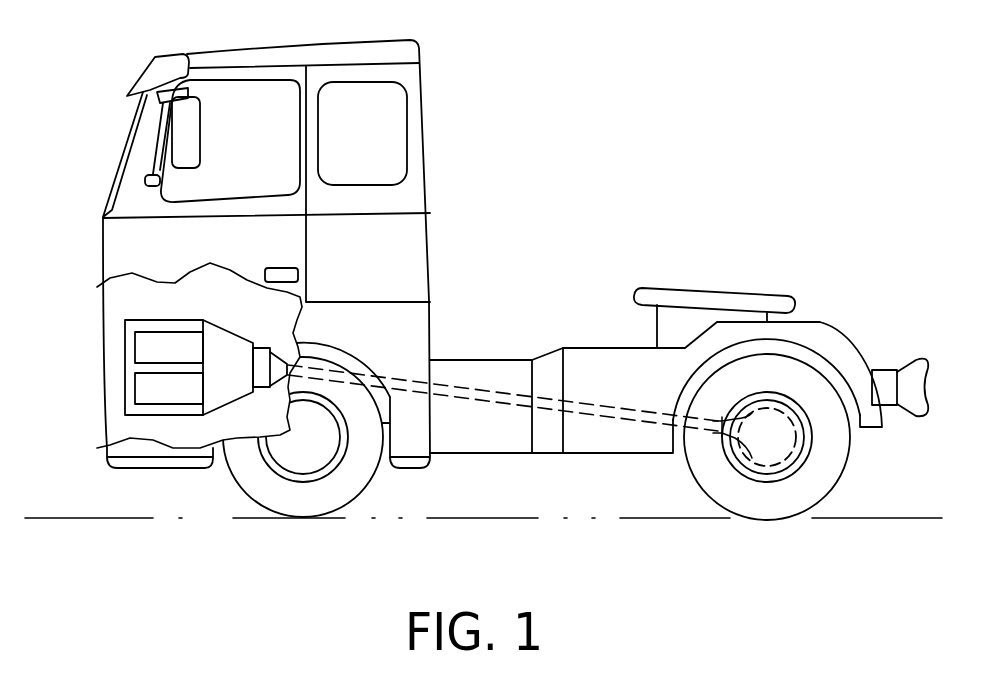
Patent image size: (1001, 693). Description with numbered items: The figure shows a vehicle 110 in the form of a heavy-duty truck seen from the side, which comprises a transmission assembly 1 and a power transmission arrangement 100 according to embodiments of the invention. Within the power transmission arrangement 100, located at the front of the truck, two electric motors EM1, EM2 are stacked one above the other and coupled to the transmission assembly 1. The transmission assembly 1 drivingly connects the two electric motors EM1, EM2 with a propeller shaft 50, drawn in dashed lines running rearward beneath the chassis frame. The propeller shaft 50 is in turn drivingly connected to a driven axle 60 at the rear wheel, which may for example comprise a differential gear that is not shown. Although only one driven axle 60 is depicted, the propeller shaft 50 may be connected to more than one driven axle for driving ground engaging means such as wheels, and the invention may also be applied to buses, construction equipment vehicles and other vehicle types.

The vehicle 110 is at (483, 295).
The power transmission arrangement 100 is at (156, 451).
The transmission assembly 1 is at (228, 375).
The electric motor EM1 is at (133, 347).
The electric motor EM2 is at (133, 390).
The propeller shaft 50 is at (503, 403).
The driven axle 60 is at (767, 437).